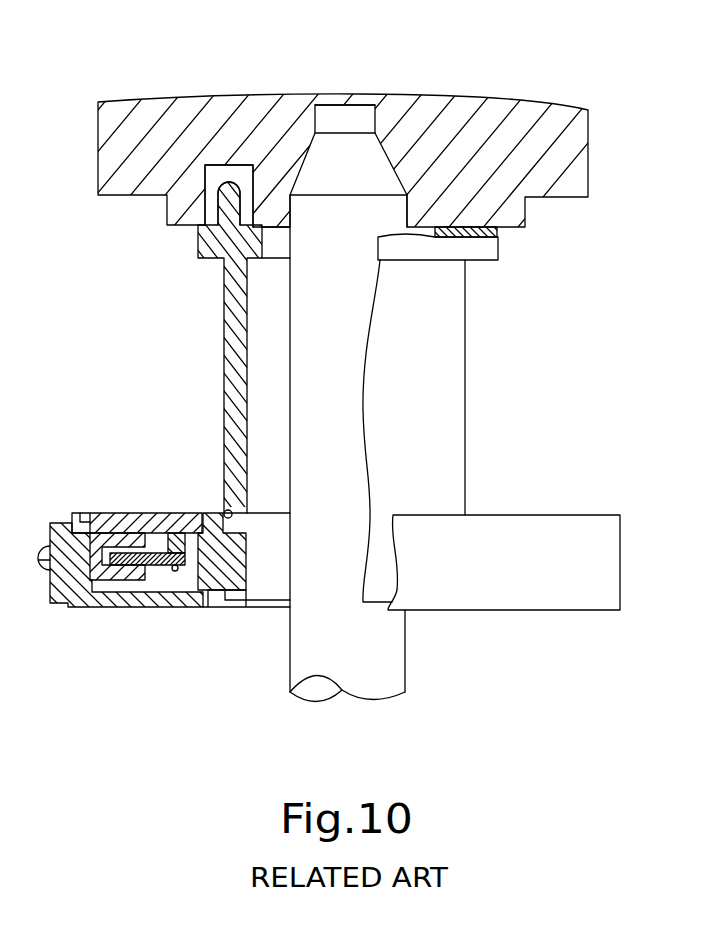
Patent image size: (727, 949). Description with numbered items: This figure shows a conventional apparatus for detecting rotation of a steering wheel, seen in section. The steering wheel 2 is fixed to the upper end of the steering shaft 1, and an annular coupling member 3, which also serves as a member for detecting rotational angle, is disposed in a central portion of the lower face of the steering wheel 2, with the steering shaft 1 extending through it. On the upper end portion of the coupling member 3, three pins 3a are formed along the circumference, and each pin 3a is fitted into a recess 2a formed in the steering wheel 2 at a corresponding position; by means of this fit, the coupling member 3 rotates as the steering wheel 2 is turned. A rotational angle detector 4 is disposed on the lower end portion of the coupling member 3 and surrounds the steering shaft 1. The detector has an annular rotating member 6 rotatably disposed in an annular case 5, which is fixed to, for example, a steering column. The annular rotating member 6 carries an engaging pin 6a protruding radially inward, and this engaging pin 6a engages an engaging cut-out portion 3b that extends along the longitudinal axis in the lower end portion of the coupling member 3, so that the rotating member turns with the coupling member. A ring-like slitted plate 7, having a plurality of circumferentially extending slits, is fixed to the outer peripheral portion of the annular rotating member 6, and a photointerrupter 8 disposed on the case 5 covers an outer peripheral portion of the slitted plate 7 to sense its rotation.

The steering shaft 1 is at (405, 663).
The steering wheel 2 is at (557, 200).
The recess 2a is at (215, 180).
The coupling member 3 is at (223, 357).
The pin 3a is at (242, 177).
The engaging cut-out portion 3b is at (223, 513).
The rotational angle detector 4 is at (594, 506).
The annular case 5 is at (92, 608).
The annular rotating member 6 is at (217, 592).
The engaging pin 6a is at (242, 607).
The slitted plate 7 is at (150, 588).
The photointerrupter 8 is at (62, 525).